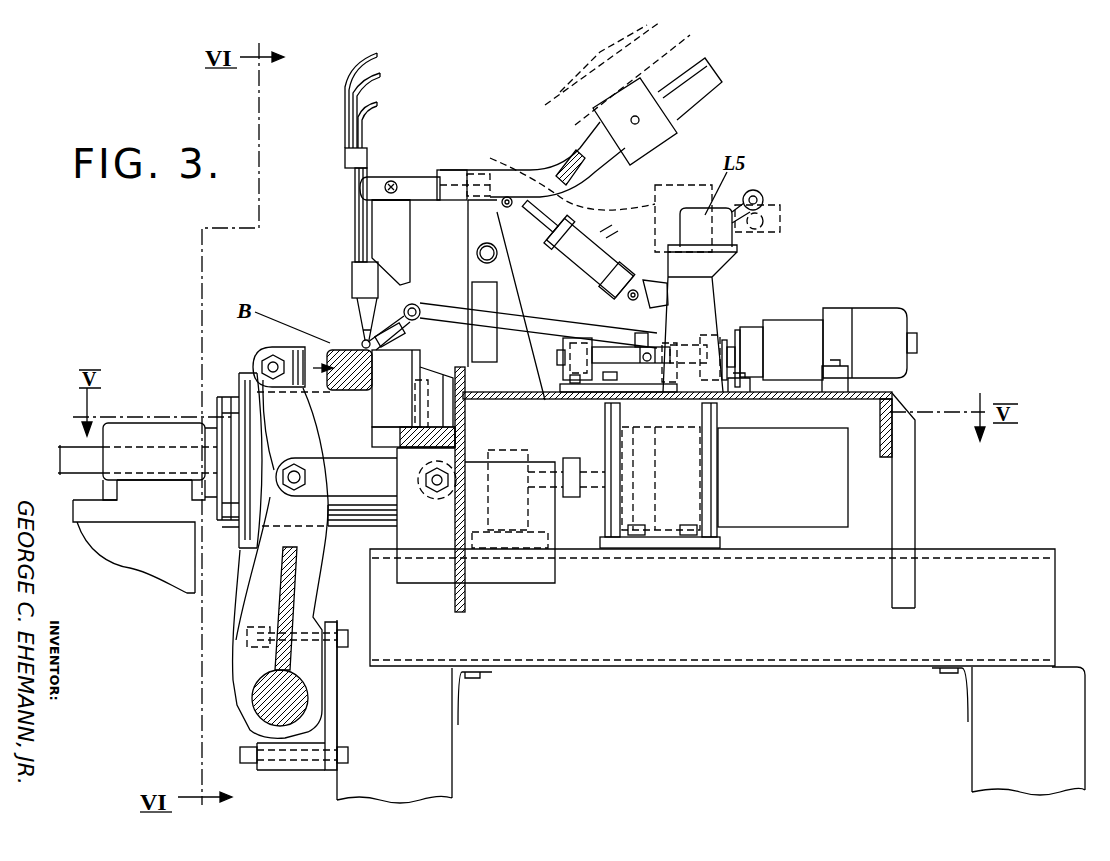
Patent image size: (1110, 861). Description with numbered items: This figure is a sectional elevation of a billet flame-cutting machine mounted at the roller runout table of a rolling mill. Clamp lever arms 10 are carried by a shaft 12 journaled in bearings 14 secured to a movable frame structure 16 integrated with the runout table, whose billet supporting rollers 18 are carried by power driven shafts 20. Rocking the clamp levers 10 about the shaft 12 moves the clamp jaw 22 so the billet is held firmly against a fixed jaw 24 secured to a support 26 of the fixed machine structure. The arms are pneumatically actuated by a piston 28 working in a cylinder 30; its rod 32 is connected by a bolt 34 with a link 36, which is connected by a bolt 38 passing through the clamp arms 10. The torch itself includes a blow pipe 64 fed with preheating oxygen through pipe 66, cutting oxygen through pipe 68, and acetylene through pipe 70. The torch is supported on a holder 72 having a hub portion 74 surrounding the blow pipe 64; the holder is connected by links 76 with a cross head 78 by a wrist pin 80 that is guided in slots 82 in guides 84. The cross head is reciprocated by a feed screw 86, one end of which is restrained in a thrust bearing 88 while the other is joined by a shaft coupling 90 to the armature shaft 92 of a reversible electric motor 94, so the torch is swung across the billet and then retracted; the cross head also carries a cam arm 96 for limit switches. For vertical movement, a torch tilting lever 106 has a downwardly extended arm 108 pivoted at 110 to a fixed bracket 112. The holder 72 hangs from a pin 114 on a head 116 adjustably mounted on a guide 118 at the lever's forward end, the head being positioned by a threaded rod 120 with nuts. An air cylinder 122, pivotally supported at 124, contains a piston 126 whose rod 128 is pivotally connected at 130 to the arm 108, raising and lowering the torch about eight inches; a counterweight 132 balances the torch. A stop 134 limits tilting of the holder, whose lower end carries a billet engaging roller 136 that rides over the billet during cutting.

The clamp lever arms 10 is at (240, 612).
The shaft 12 is at (266, 697).
The bearings 14 is at (233, 712).
The movable frame structure 16 is at (440, 752).
The billet supporting rollers 18 is at (233, 408).
The power driven shafts 20 is at (72, 453).
The clamp jaw 22 is at (267, 350).
The fixed jaw 24 is at (387, 380).
The support 26 is at (437, 440).
The piston 28 is at (640, 451).
The cylinder 30 is at (692, 477).
The piston rod 32 is at (558, 490).
The bolt 34 is at (420, 498).
The link 36 is at (350, 470).
The bolt 38 is at (290, 490).
The blow pipe 64 is at (358, 207).
The preheating oxygen pipe 66 is at (378, 54).
The cutting oxygen pipe 68 is at (382, 75).
The acetylene pipe 70 is at (378, 104).
The torch holder 72 is at (368, 228).
The hub portion 74 is at (352, 277).
The links 76 is at (543, 350).
The cross head 78 is at (632, 358).
The wrist pin 80 is at (652, 375).
The slots 82 is at (600, 345).
The guides 84 is at (628, 375).
The feed screw 86 is at (687, 352).
The thrust bearing 88 is at (560, 357).
The shaft coupling 90 is at (718, 345).
The armature shaft 92 is at (740, 337).
The reversible electric motor 94 is at (856, 292).
The arm 96 is at (648, 337).
The torch tilting lever 106 is at (453, 170).
The downwardly extended arm 108 is at (475, 223).
The pivot 110 is at (478, 253).
The fixed bracket 112 is at (483, 277).
The pin 114 is at (392, 177).
The head 116 is at (403, 170).
The guide 118 is at (362, 182).
The threaded rod 120 is at (430, 173).
The air cylinder 122 is at (606, 258).
The pivotal support 124 is at (634, 290).
The piston 126 is at (603, 232).
The piston rod 128 is at (572, 202).
The pivotal connection 130 is at (505, 197).
The counterweight 132 is at (667, 132).
The stop 134 is at (404, 343).
The billet engaging roller 136 is at (358, 340).